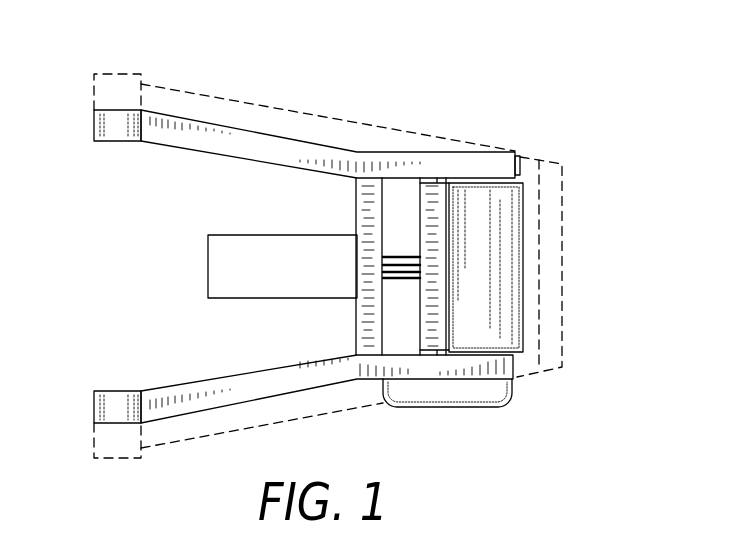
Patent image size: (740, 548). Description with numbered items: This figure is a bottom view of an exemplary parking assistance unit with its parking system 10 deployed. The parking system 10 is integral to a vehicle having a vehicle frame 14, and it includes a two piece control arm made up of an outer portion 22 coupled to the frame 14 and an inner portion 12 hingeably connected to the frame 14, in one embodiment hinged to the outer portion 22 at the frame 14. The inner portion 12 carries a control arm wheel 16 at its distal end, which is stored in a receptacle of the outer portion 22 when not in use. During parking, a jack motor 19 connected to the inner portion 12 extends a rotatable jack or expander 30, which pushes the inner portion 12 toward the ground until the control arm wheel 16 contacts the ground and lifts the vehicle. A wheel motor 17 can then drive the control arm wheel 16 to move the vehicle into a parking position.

The parking system 10 is at (558, 93).
The inner portion 12 is at (212, 142).
The vehicle frame 14 is at (108, 122).
The control arm wheel 16 is at (497, 253).
The wheel motor 17 is at (473, 407).
The jack motor 19 is at (215, 262).
The outer portion 22 is at (263, 104).
The jack 30 is at (401, 253).